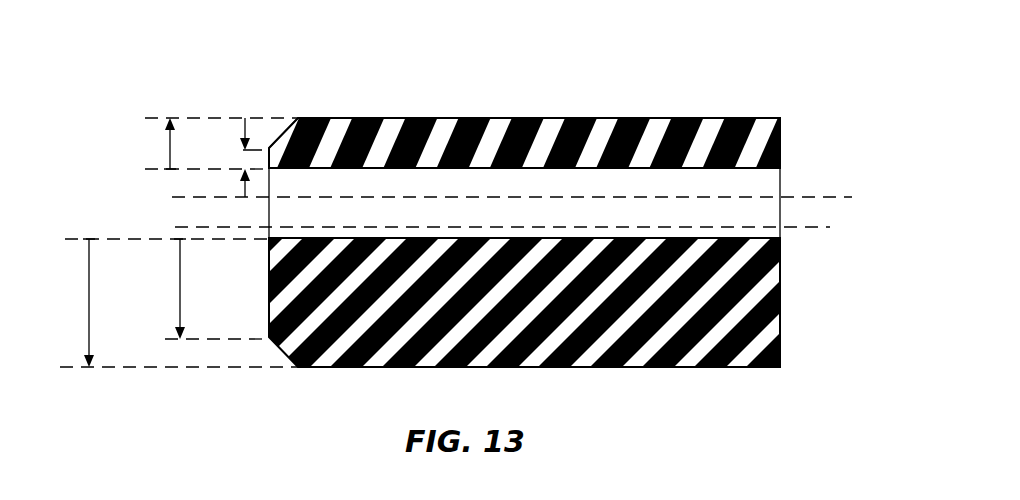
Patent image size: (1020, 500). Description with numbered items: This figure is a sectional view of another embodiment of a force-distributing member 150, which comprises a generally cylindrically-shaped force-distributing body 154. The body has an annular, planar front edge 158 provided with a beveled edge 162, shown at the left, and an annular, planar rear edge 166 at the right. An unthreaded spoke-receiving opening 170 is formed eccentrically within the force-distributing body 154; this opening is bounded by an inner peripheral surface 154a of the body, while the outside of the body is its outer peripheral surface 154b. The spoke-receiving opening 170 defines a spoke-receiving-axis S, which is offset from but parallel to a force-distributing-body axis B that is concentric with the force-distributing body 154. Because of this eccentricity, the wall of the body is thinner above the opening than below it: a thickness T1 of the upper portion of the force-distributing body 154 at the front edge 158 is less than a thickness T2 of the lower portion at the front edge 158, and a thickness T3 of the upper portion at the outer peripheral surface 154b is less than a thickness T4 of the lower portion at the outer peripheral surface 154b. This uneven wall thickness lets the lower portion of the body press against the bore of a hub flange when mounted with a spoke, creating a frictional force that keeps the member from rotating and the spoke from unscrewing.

The force-distributing member 150 is at (540, 192).
The force-distributing body 154 is at (464, 108).
The inner peripheral surface 154a is at (504, 168).
The outer peripheral surface 154b is at (343, 118).
The front edge 158 is at (268, 292).
The beveled edge 162 is at (277, 138).
The rear edge 166 is at (781, 137).
The spoke-receiving opening 170 is at (397, 195).
The spoke-receiving-axis S is at (818, 196).
The force-distributing-body axis B is at (812, 228).
The thickness T1 is at (243, 160).
The thickness T2 is at (165, 289).
The thickness T3 is at (154, 143).
The thickness T4 is at (74, 303).